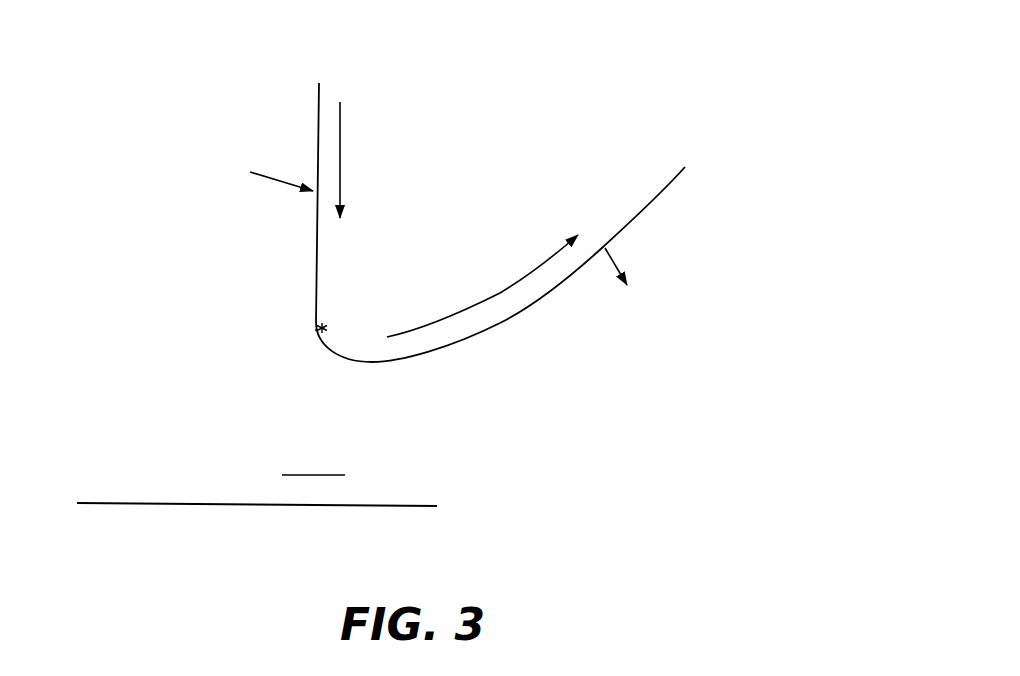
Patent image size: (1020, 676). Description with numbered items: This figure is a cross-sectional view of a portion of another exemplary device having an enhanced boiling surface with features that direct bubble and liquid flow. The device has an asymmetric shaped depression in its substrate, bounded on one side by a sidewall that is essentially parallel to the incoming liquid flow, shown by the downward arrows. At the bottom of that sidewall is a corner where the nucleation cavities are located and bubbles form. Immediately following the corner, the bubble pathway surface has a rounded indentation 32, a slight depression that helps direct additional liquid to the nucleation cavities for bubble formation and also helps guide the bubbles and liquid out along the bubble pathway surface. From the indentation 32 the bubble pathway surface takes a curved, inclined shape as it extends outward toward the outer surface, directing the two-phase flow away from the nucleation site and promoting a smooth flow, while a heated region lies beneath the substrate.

The rounded indentation 32 is at (377, 370).